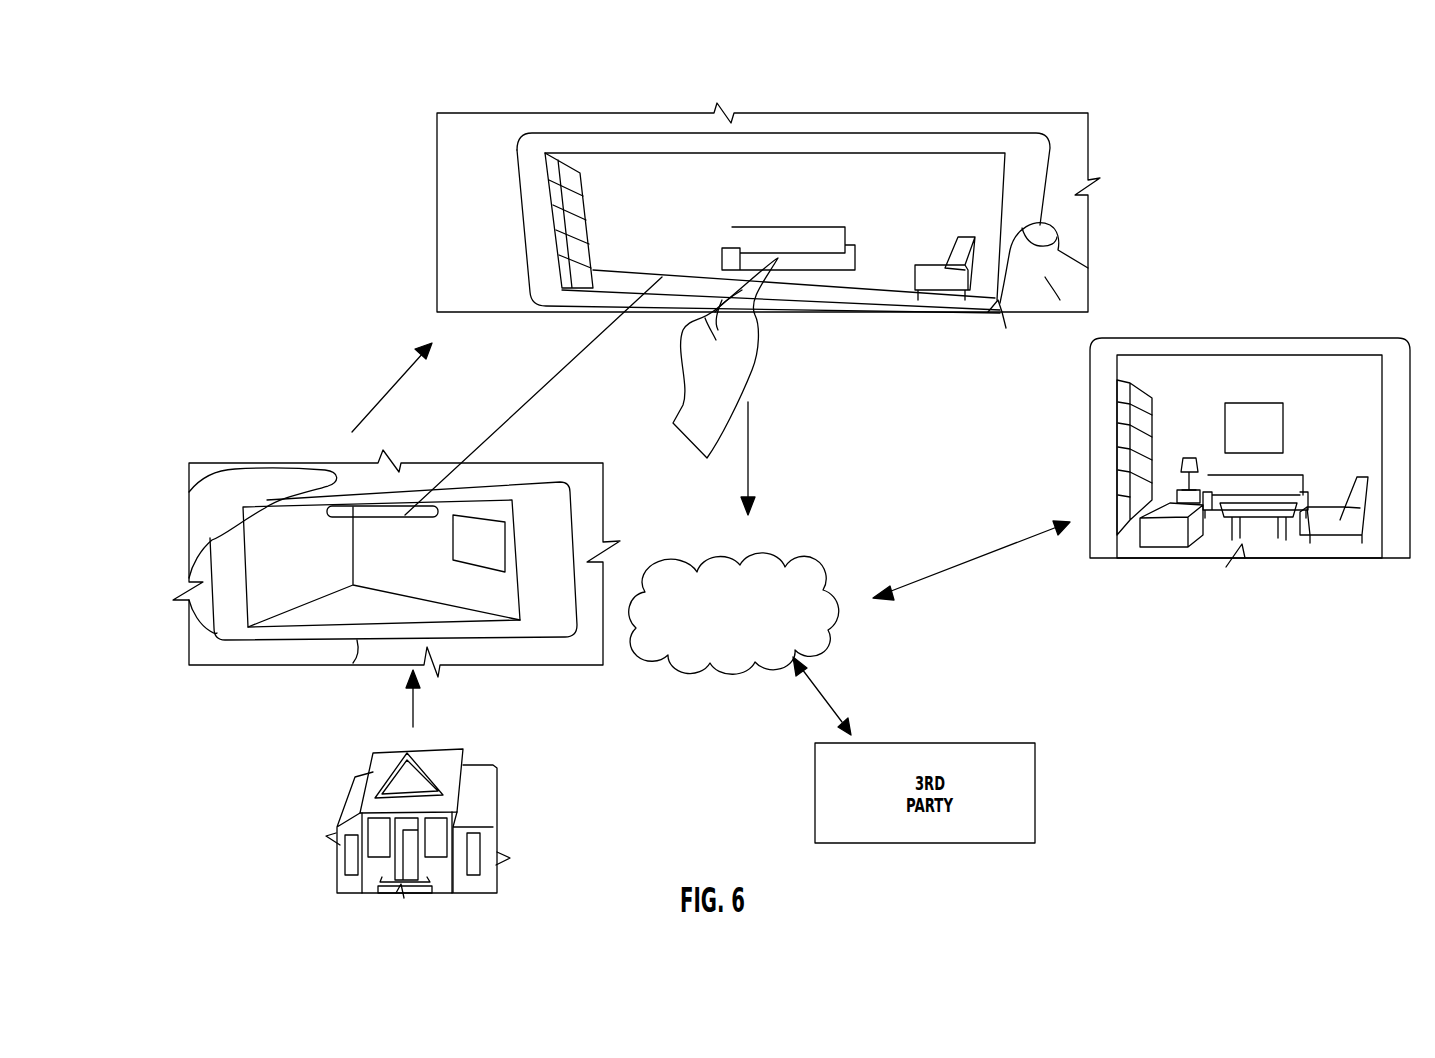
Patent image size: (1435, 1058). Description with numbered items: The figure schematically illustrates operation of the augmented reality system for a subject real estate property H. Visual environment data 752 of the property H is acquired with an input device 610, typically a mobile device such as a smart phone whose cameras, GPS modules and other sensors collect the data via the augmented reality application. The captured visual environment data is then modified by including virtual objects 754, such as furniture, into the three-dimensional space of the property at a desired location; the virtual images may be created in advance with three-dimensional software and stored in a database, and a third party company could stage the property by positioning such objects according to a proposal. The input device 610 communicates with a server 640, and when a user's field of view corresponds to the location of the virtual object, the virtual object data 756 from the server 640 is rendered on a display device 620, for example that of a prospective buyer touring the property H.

The input device 610 is at (1033, 162).
The display device 620 is at (1122, 424).
The server 640 is at (783, 572).
The visual environment data 752 is at (237, 577).
The virtual objects 754 is at (672, 233).
The virtual object data 756 is at (1240, 490).
The subject property H is at (352, 795).